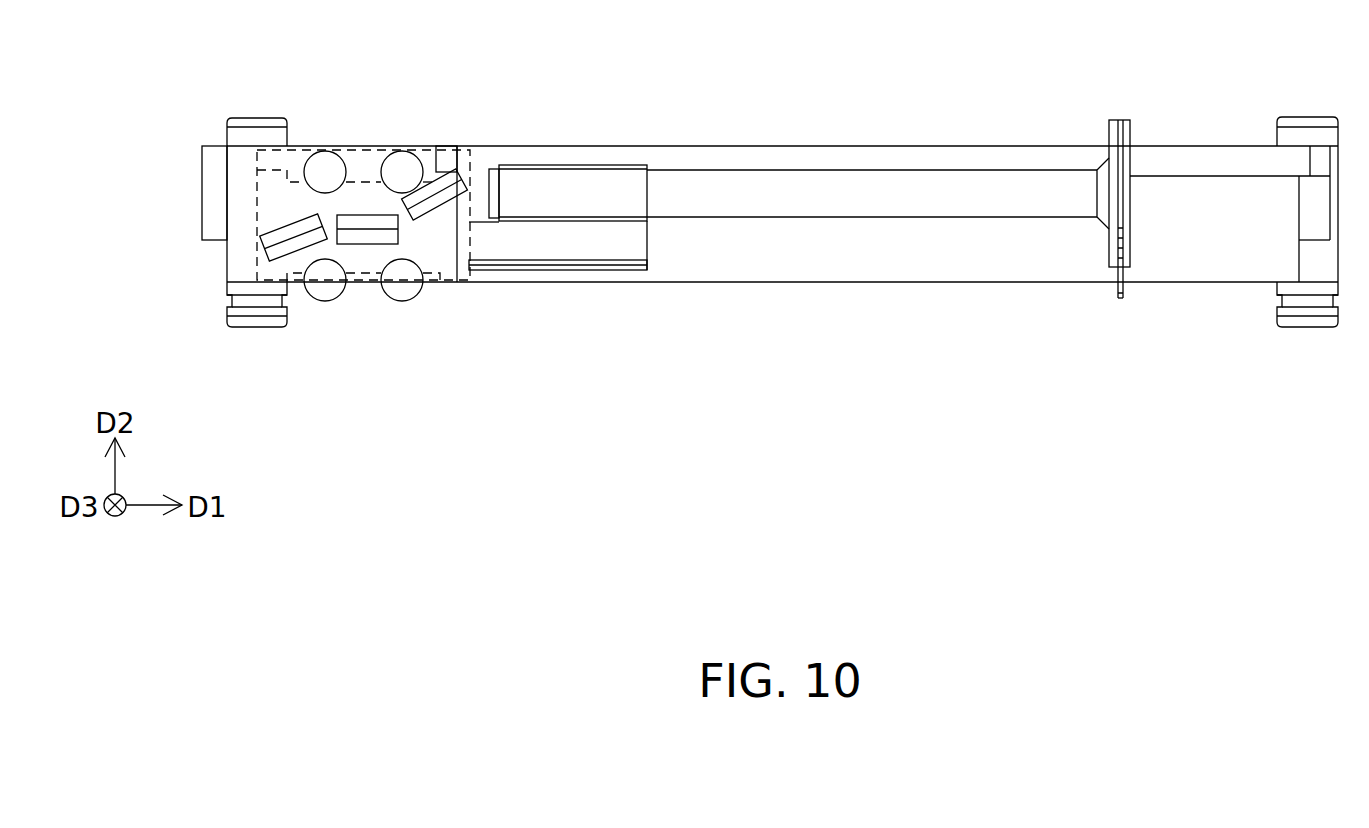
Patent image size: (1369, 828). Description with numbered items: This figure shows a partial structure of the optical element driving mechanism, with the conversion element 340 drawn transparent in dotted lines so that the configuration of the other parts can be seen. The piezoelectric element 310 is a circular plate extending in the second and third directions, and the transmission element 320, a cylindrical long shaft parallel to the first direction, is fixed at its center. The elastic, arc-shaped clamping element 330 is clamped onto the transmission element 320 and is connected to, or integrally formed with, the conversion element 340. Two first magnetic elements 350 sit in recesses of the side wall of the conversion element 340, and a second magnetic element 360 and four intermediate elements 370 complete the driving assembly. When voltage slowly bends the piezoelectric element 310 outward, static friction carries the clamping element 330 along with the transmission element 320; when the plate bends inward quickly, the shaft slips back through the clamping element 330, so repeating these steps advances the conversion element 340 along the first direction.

The piezoelectric element 310 is at (1130, 122).
The transmission element 320 is at (833, 193).
The clamping element 330 is at (580, 193).
The conversion element 340 is at (445, 255).
The first magnetic elements 350 is at (280, 237).
The second magnetic element 360 is at (365, 244).
The intermediate elements 370 is at (402, 167).